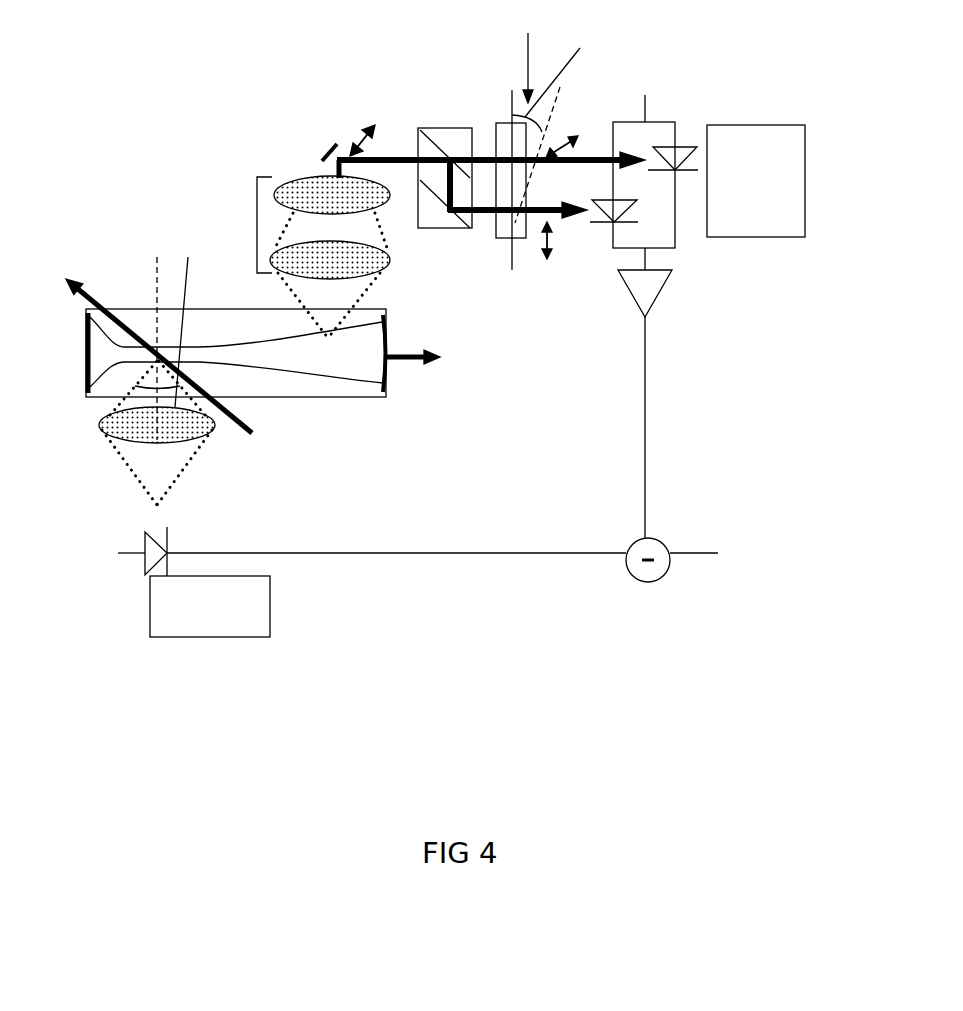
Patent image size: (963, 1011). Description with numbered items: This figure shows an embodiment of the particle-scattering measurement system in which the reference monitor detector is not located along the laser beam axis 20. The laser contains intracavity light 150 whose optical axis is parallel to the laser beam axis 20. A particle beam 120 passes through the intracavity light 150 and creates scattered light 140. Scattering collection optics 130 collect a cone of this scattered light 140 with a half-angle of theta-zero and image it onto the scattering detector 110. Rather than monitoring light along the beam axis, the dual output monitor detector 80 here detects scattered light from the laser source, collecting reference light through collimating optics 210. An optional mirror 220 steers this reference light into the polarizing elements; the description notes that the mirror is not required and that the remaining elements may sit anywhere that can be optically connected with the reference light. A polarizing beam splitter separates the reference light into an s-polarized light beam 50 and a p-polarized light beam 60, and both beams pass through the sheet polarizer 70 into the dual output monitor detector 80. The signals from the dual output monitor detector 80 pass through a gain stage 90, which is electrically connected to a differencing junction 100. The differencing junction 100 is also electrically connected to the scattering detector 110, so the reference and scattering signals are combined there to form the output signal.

The laser beam axis 20 is at (387, 157).
The s-polarized light beam 50 is at (480, 210).
The p-polarized light beam 60 is at (481, 213).
The sheet polarizer 70 is at (525, 240).
The dual output monitor detector 80 is at (805, 205).
The gain stage 90 is at (658, 300).
The differencing junction 100 is at (628, 568).
The scattering detector 110 is at (270, 613).
The particle beam 120 is at (98, 303).
The scattering collection optics 130 is at (207, 428).
The scattered light 140 is at (86, 388).
The intracavity light 150 is at (287, 355).
The collimating optics 210 is at (255, 223).
The mirror 220 is at (323, 140).